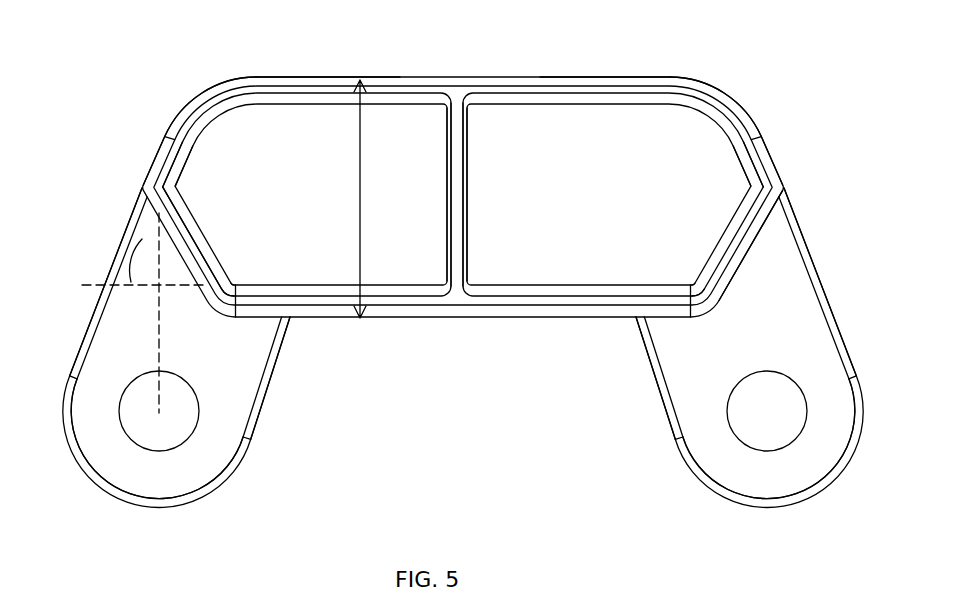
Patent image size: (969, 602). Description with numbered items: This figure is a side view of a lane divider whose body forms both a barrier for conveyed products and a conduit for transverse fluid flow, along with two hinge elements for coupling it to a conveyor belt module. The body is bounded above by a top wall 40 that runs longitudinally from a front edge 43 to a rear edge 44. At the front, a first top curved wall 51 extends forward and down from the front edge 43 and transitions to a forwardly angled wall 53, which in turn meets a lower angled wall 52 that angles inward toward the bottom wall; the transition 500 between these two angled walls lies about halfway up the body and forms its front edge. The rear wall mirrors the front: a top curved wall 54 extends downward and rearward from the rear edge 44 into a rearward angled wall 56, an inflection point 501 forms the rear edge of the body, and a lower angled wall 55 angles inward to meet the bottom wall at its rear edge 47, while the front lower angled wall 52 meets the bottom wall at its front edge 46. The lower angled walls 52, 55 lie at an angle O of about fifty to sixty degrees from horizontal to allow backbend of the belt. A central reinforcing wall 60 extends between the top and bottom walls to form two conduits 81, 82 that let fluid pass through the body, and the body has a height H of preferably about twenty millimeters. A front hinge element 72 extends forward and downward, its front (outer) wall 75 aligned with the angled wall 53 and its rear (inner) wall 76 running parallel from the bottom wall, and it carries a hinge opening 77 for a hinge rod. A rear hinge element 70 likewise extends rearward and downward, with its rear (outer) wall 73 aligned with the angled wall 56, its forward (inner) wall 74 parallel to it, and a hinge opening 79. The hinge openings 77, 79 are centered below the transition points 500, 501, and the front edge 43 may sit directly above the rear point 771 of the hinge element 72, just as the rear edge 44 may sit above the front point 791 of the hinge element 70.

The top wall 40 is at (405, 77).
The front edge 43 is at (665, 77).
The rear edge 44 is at (268, 77).
The front edge 46 is at (694, 283).
The rear edge 47 is at (232, 283).
The first top curved wall 51 is at (706, 90).
The lower angled wall 52 is at (766, 246).
The forwardly angled wall 53 is at (748, 170).
The top curved wall 54 is at (215, 100).
The lower angled wall 55 is at (190, 245).
The rearward angled wall 56 is at (152, 162).
The central reinforcing wall 60 is at (448, 215).
The rear hinge element 70 is at (183, 473).
The front hinge element 72 is at (750, 470).
The rear (outer) wall 73 is at (74, 362).
The forward (inner) wall 74 is at (279, 360).
The front (outer) wall 75 is at (832, 312).
The rear (inner) wall 76 is at (648, 352).
The hinge opening 77 is at (769, 409).
The hinge opening 79 is at (159, 411).
The conduit 81 is at (324, 168).
The conduit 82 is at (579, 171).
The transition 500 is at (784, 212).
The inflection point 501 is at (178, 190).
The rear point 771 is at (662, 410).
The front point 791 is at (258, 432).
The height H is at (362, 199).
The angle Θ O is at (140, 252).